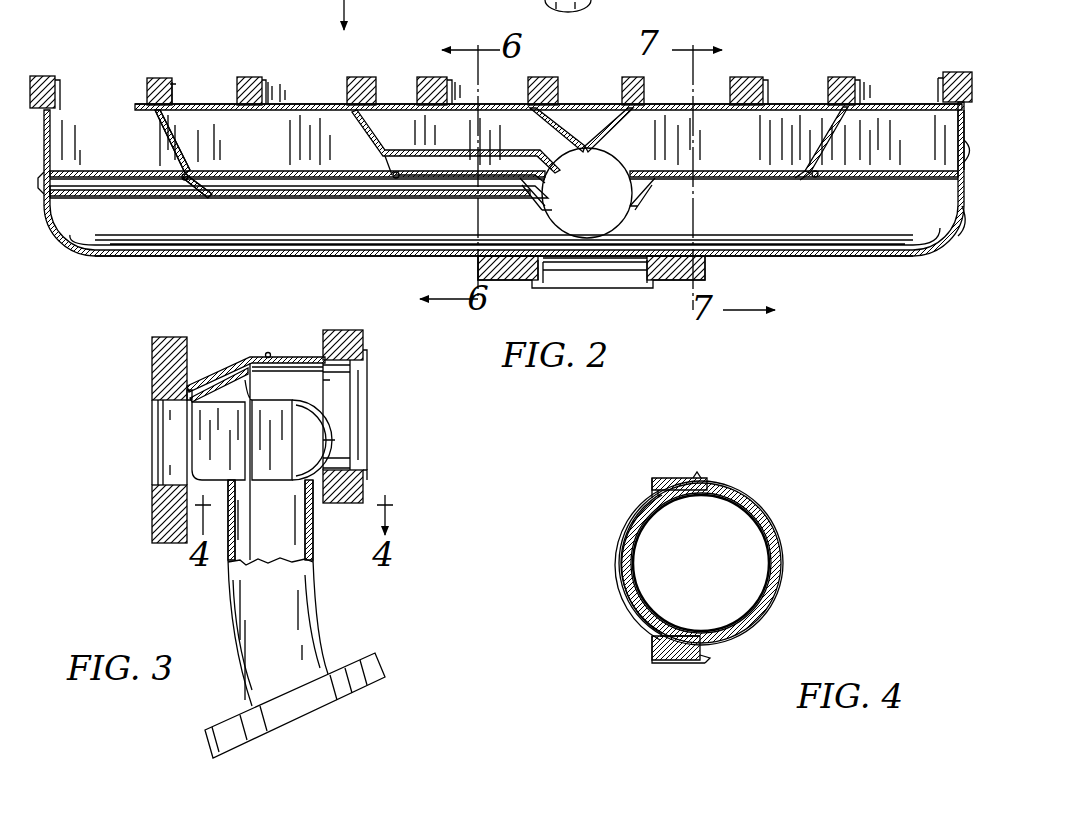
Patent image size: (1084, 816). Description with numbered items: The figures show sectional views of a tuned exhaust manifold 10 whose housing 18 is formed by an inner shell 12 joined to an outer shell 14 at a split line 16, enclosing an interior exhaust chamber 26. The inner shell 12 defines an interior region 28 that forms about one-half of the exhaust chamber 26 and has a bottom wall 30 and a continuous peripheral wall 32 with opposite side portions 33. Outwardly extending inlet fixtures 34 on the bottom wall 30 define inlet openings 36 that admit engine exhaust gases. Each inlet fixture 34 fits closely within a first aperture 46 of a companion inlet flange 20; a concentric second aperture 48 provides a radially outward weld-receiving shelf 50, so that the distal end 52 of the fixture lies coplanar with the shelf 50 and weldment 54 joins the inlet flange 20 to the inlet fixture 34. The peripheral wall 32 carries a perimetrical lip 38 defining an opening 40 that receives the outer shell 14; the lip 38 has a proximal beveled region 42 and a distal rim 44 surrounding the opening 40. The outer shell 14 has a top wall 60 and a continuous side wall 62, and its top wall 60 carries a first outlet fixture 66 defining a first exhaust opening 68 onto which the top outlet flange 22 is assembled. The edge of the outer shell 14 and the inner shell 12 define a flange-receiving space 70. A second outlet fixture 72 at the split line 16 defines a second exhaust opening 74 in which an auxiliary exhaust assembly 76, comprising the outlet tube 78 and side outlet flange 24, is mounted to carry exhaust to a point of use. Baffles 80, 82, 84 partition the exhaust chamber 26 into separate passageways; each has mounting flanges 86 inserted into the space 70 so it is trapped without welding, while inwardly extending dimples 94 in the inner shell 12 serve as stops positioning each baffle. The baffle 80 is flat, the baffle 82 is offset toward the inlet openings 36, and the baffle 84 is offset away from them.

In FIG. 2, the exhaust manifold 10 is at (853, 60).
In FIG. 3, the exhaust manifold 10 is at (146, 562).
In FIG. 2, the inner shell 12 is at (211, 98).
In FIG. 3, the inner shell 12 is at (225, 360).
In FIG. 4, the inner shell 12 is at (606, 546).
In FIG. 2, the outer shell 14 is at (92, 268).
In FIG. 3, the outer shell 14 is at (302, 352).
In FIG. 4, the outer shell 14 is at (786, 554).
In FIG. 2, the split line 16 is at (38, 208).
In FIG. 3, the split line 16 is at (259, 346).
In FIG. 4, the split line 16 is at (685, 463).
In FIG. 2, the housing 18 is at (880, 276).
In FIG. 3, the housing 18 is at (205, 334).
In FIG. 4, the housing 18 is at (788, 478).
In FIG. 2, the inlet flanges 20 is at (163, 92).
In FIG. 2, the top outlet flange 22 is at (683, 285).
In FIG. 3, the top outlet flange 22 is at (358, 339).
In FIG. 3, the side outlet flange 24 is at (376, 656).
In FIG. 2, the exhaust chamber 26 is at (887, 216).
In FIG. 2, the interior region 28 is at (140, 148).
In FIG. 2, the bottom wall 30 is at (391, 104).
In FIG. 3, the bottom wall 30 is at (165, 393).
In FIG. 4, the bottom wall 30 is at (618, 601).
In FIG. 2, the peripheral wall 32 is at (714, 154).
In FIG. 3, the peripheral wall 32 is at (206, 372).
In FIG. 3, the side portions 33 is at (216, 402).
In FIG. 2, the inlet fixtures 34 is at (142, 98).
In FIG. 3, the inlet fixtures 34 is at (172, 404).
In FIG. 2, the inlet openings 36 is at (72, 68).
In FIG. 3, the inlet openings 36 is at (145, 462).
In FIG. 2, the perimetrical lip 38 is at (956, 142).
In FIG. 3, the perimetrical lip 38 is at (270, 352).
In FIG. 4, the perimetrical lip 38 is at (655, 470).
In FIG. 4, the opening 40 is at (714, 473).
In FIG. 4, the proximal beveled region 42 is at (650, 646).
In FIG. 4, the distal rim 44 is at (695, 663).
In FIG. 2, the first aperture 46 is at (278, 96).
In FIG. 2, the second aperture 48 is at (256, 78).
In FIG. 2, the weld-receiving shelf 50 is at (262, 104).
In FIG. 2, the distal end 52 is at (266, 84).
In FIG. 2, the weldment 54 is at (354, 86).
In FIG. 2, the top wall 60 is at (802, 256).
In FIG. 4, the top wall 60 is at (783, 584).
In FIG. 2, the side wall 62 is at (960, 215).
In FIG. 4, the side wall 62 is at (720, 652).
In FIG. 2, the first outlet fixture 66 is at (552, 265).
In FIG. 3, the first outlet fixture 66 is at (338, 378).
In FIG. 2, the first exhaust opening 68 is at (625, 306).
In FIG. 3, the first exhaust opening 68 is at (378, 437).
In FIG. 2, the flange-receiving space 70 is at (134, 176).
In FIG. 3, the flange-receiving space 70 is at (258, 380).
In FIG. 3, the second outlet fixture 72 is at (306, 505).
In FIG. 4, the second outlet fixture 72 is at (784, 516).
In FIG. 2, the second exhaust opening 74 is at (618, 230).
In FIG. 3, the second exhaust opening 74 is at (313, 552).
In FIG. 3, the auxiliary exhaust assembly 76 is at (323, 628).
In FIG. 3, the outlet tube 78 is at (246, 612).
In FIG. 4, the outlet tube 78 is at (683, 505).
In FIG. 2, the baffle 80 is at (744, 181).
In FIG. 3, the baffle 80 is at (260, 468).
In FIG. 2, the baffle 82 is at (437, 164).
In FIG. 2, the baffle 84 is at (342, 196).
In FIG. 3, the mounting flange 86 is at (246, 360).
In FIG. 2, the dimples 94 is at (392, 174).